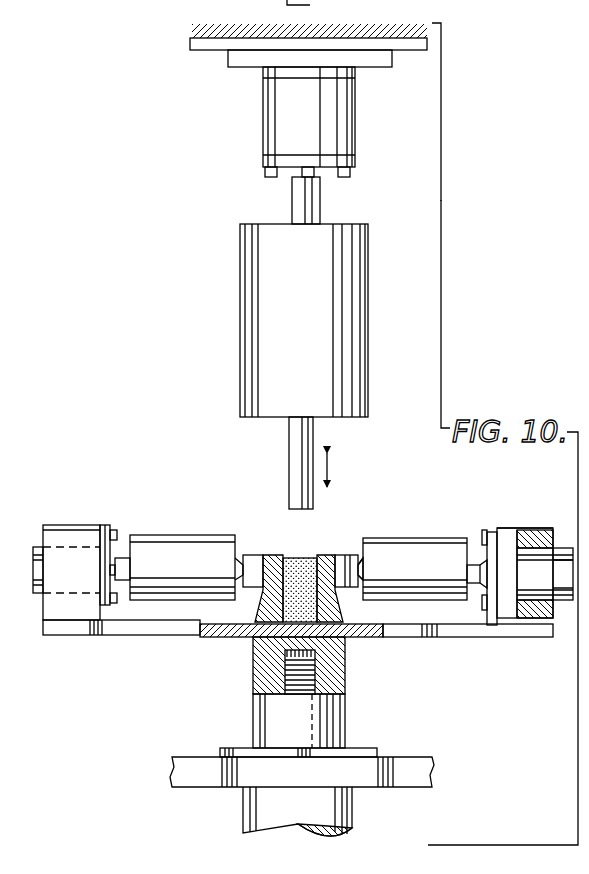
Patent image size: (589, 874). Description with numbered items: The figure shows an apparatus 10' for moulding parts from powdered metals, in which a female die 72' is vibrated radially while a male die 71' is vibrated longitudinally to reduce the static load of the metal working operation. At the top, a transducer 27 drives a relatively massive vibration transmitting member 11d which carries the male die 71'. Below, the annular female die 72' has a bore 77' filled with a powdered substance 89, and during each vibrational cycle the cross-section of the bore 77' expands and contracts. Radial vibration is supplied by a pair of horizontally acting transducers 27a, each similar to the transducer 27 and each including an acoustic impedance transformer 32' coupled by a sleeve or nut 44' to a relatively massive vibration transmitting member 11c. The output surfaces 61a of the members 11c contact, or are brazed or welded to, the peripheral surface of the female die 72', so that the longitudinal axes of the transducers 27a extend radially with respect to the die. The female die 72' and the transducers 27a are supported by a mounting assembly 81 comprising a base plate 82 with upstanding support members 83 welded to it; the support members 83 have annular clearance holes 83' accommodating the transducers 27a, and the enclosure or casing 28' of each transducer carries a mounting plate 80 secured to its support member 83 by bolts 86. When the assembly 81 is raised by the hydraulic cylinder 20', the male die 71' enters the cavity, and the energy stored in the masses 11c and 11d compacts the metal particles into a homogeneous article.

The apparatus 10' is at (415, 195).
The transducer 27 is at (355, 128).
The vibration transmitting member 11d is at (368, 316).
The male die 71' is at (290, 463).
The female die 72' is at (300, 576).
The powdered substance 89 is at (306, 556).
The bore 77' is at (359, 543).
The output surfaces 61a is at (243, 553).
The sleeve or nut 44' is at (121, 629).
The base plate 82 is at (508, 632).
The hydraulic cylinder 20' is at (319, 811).
The enclosure or casing 28' is at (291, 599).
The transducers 27a is at (38, 600).
The bolts 86 is at (112, 602).
The acoustic impedance transformer 32' is at (133, 541).
The vibration transmitting member 11c is at (180, 545).
The mounting plate 80 is at (489, 612).
The upstanding support members 83 is at (546, 548).
The annular clearance holes 83' is at (557, 621).
The mounting assembly 81 is at (508, 506).